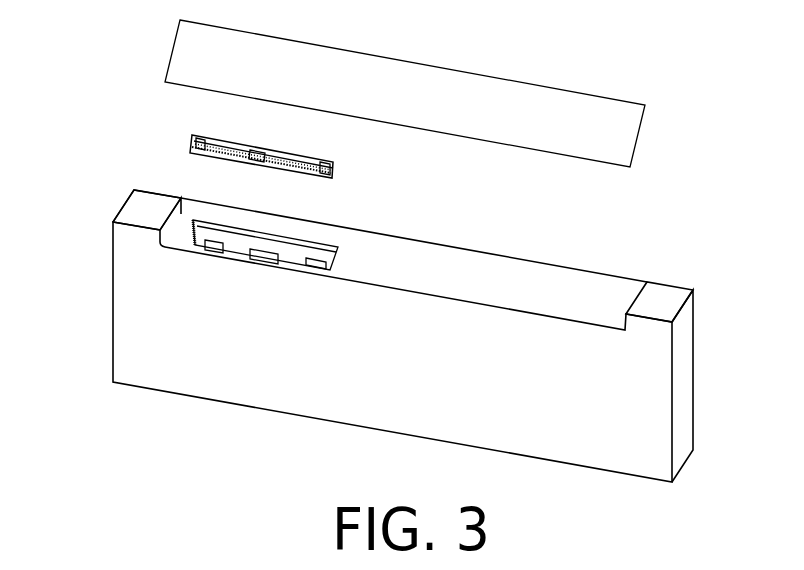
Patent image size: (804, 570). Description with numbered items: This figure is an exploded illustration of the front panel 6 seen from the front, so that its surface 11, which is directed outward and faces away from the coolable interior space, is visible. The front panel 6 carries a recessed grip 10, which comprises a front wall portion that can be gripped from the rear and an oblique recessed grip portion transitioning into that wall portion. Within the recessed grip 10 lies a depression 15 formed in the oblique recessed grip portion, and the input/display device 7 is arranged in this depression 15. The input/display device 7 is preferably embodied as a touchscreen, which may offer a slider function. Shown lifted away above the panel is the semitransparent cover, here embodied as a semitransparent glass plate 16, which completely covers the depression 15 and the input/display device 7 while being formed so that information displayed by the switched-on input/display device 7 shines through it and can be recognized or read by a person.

The front panel 6 is at (78, 128).
The input/display device 7 is at (334, 163).
The recessed grip 10 is at (622, 254).
The surface 11 is at (410, 375).
The depression 15 is at (239, 246).
The semitransparent glass plate 16 is at (413, 113).